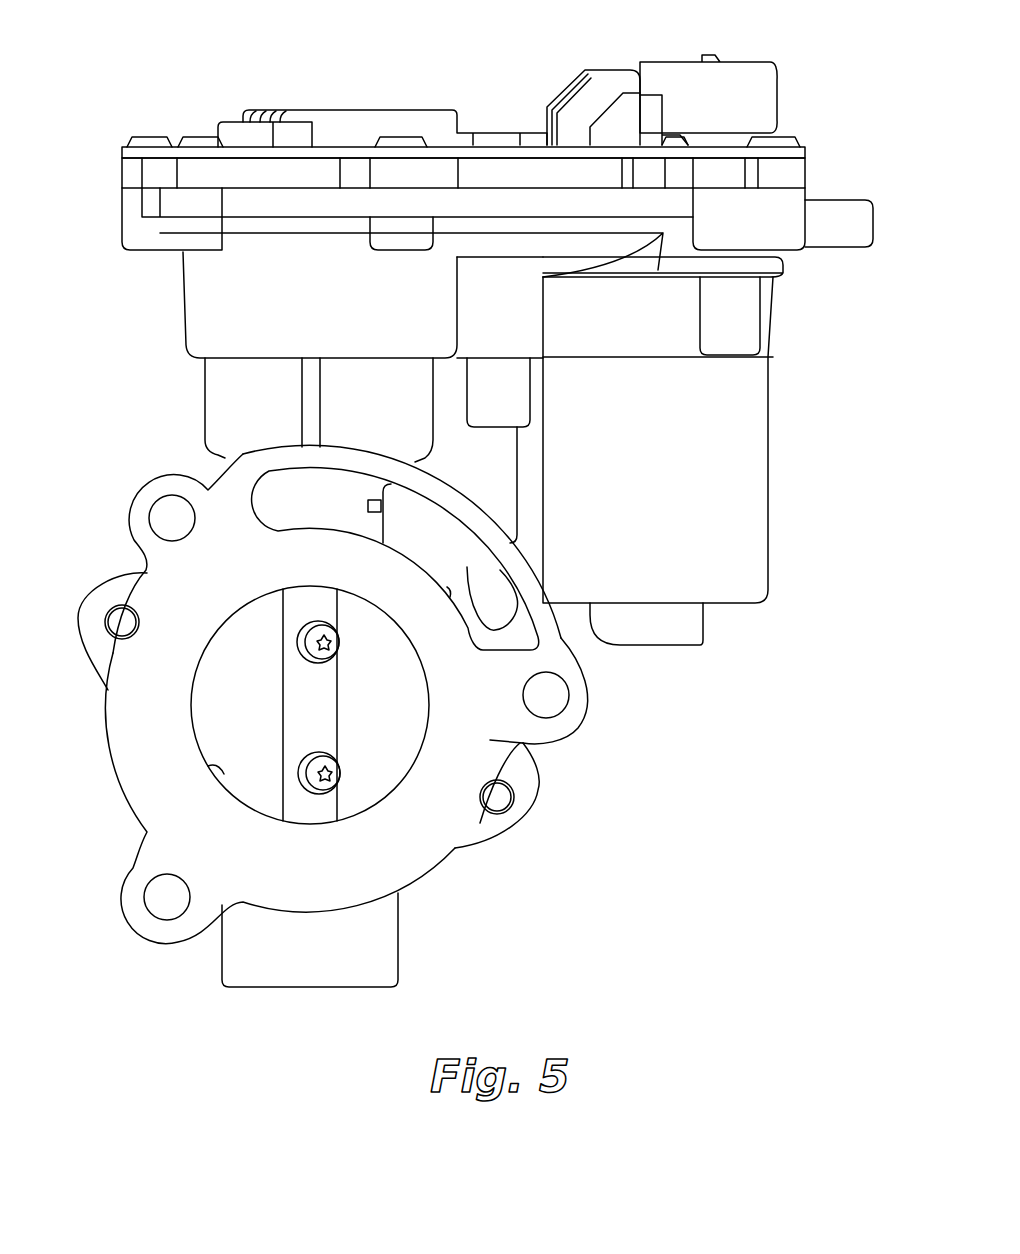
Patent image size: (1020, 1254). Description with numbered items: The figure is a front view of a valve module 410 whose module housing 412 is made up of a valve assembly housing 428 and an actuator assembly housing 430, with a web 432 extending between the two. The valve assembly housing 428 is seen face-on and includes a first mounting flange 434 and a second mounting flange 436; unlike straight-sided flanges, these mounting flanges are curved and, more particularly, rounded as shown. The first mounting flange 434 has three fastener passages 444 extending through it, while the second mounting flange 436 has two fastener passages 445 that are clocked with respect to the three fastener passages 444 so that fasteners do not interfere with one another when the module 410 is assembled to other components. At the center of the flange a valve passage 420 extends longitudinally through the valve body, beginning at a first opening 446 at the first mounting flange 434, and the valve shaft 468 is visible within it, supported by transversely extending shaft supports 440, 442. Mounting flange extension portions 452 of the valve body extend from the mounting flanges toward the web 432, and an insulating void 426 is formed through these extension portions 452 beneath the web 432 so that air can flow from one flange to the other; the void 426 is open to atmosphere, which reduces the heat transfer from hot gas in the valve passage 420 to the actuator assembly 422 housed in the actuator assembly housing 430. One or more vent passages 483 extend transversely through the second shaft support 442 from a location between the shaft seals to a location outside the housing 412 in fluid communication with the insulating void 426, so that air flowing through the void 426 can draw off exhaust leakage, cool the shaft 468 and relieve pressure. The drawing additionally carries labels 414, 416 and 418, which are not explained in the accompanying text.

The valve module 410 is at (205, 75).
The actuator cover 414 is at (440, 110).
The actuator assembly 422 is at (778, 358).
The actuator assembly housing 430 is at (795, 412).
The valve assembly housing 428 is at (165, 467).
The mounting flange extension portions 452 is at (478, 507).
The module housing 412 is at (572, 650).
The second mounting flange 436 is at (538, 787).
The first mounting flange 434 is at (490, 740).
The flange lower portion 416 is at (103, 845).
The fastener passages 445 is at (120, 617).
The second shaft support 442 is at (395, 558).
The insulating void 426 is at (450, 592).
The vent passages 483 is at (383, 512).
The fastener passages 444 is at (356, 707).
The valve plate 418 is at (310, 705).
The first opening 446 is at (134, 791).
The valve passage 420 is at (220, 777).
The valve shaft 468 is at (311, 705).
The shaft support 440 is at (310, 940).
The web 432 is at (463, 443).